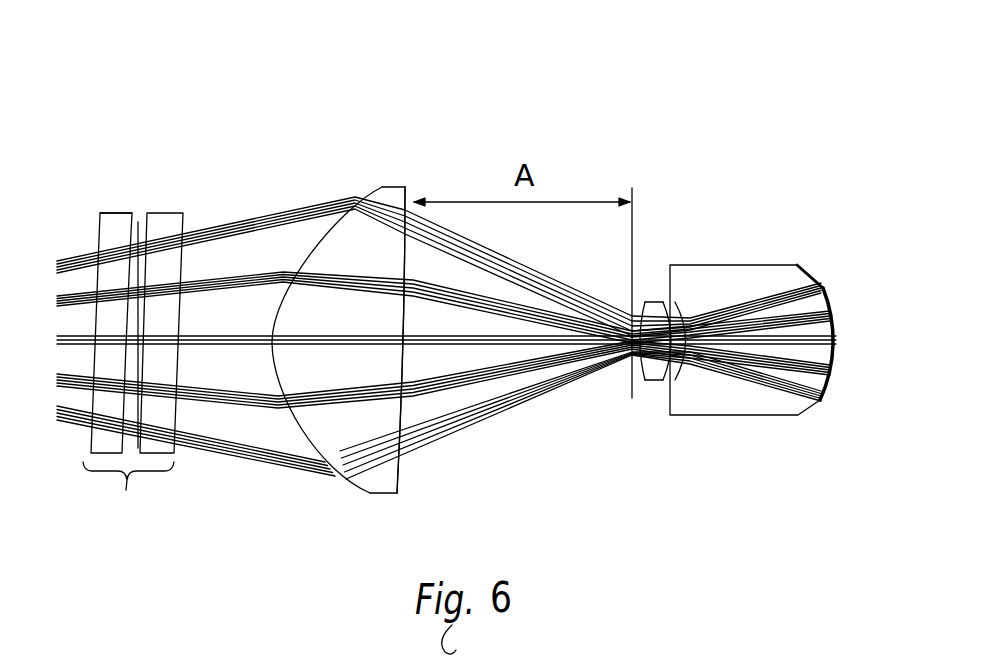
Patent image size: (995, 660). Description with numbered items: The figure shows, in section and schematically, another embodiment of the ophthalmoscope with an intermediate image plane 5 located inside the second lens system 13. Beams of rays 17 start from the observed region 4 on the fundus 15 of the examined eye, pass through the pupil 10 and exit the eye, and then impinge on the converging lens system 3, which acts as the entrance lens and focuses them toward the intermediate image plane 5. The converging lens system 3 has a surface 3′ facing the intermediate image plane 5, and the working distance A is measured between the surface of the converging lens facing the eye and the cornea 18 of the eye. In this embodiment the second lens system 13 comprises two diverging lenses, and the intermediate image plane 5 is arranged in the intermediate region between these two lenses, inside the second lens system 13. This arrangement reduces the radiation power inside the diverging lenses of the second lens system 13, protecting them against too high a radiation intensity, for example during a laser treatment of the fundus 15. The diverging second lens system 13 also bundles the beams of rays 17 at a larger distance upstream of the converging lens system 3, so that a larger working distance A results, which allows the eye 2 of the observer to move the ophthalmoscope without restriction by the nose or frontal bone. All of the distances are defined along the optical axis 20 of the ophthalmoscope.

The eye of the observer 2 is at (716, 422).
The converging lens system 3 is at (305, 423).
The surface of the lens system facing the intermediate image plane 3′ is at (413, 325).
The observed region 4 is at (833, 345).
The intermediate image plane 5 is at (130, 272).
The pupil 10 is at (662, 300).
The second lens system 13 is at (128, 498).
The fundus of the eye 15 is at (803, 280).
The beams of rays 17 is at (535, 313).
The cornea 18 is at (632, 396).
The optical axis 20 is at (203, 340).